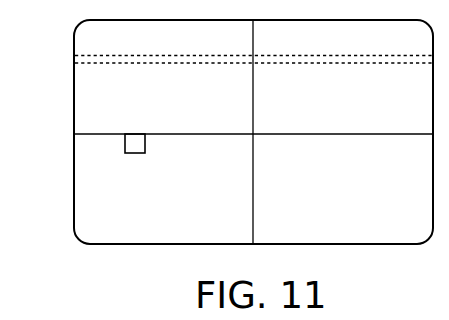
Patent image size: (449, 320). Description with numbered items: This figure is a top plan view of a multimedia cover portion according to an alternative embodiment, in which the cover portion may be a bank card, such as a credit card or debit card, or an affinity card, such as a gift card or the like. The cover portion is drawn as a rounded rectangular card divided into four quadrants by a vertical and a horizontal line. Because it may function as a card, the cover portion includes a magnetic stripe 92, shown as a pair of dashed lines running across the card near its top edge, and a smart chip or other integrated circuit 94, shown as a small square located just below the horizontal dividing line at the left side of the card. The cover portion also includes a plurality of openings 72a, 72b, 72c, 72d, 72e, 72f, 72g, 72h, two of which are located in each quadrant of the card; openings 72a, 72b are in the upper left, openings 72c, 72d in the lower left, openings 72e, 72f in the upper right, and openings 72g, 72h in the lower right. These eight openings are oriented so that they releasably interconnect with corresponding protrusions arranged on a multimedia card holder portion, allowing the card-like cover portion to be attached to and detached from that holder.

The magnetic stripe 92 is at (78, 55).
The integrated circuit 94 is at (125, 143).
The opening 72a is at (130, 33).
The opening 72b is at (108, 70).
The opening 72c is at (108, 196).
The opening 72d is at (129, 231).
The opening 72e is at (378, 33).
The opening 72f is at (397, 68).
The opening 72g is at (398, 197).
The opening 72h is at (376, 232).